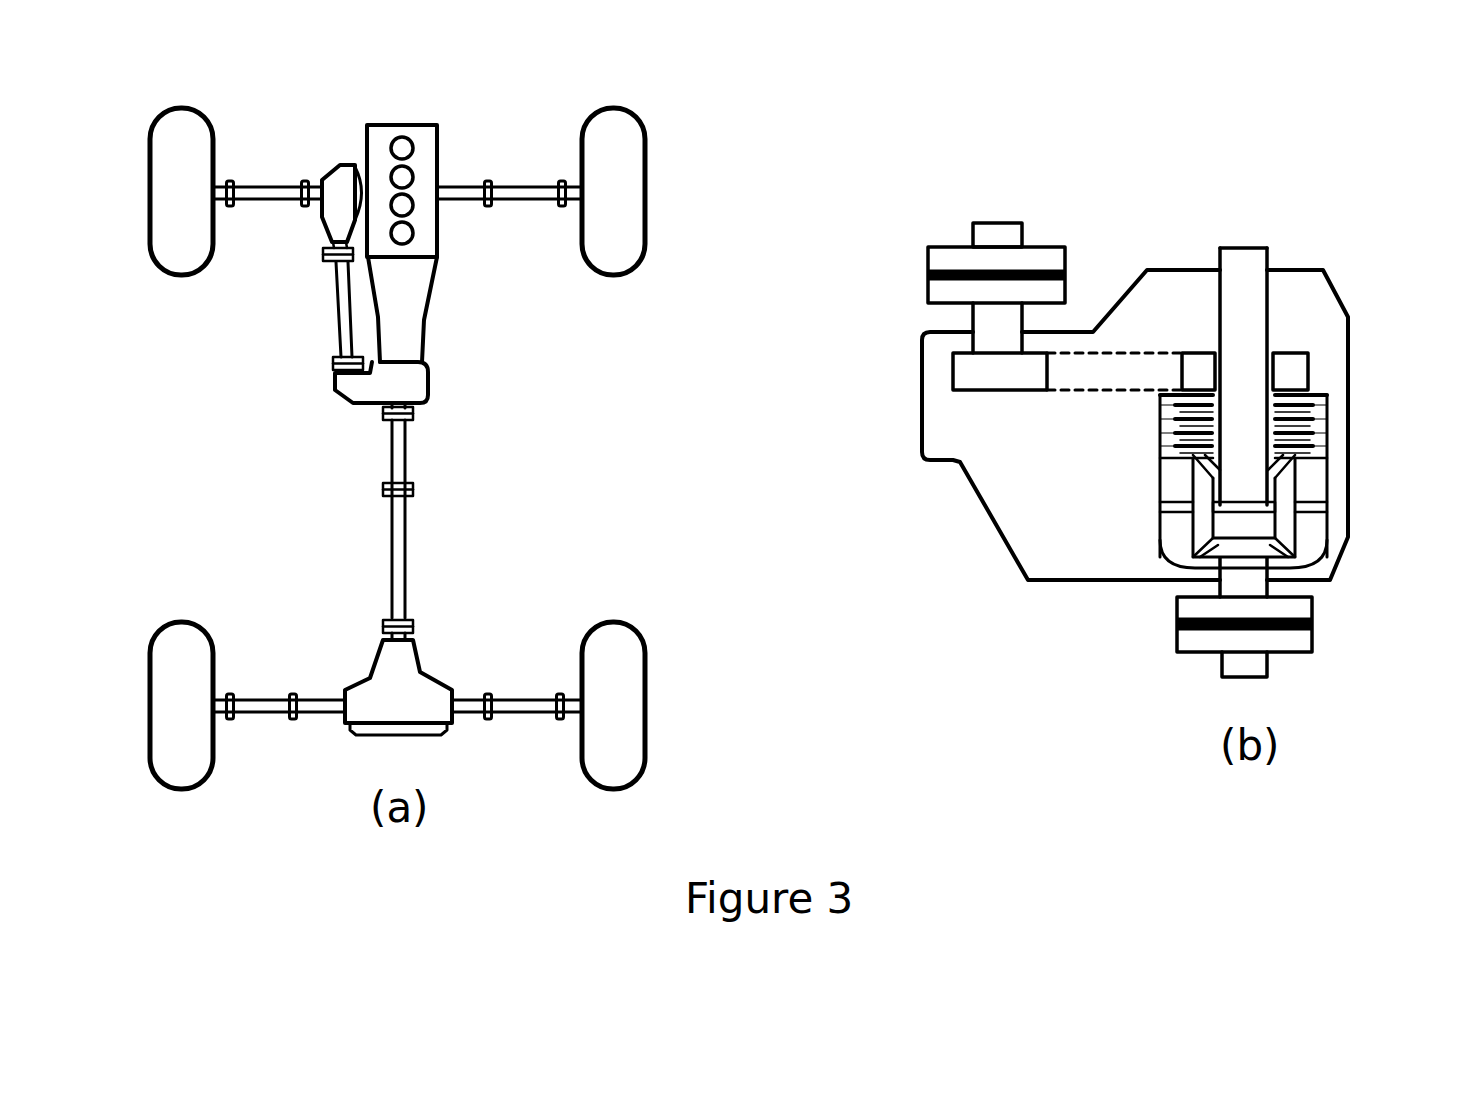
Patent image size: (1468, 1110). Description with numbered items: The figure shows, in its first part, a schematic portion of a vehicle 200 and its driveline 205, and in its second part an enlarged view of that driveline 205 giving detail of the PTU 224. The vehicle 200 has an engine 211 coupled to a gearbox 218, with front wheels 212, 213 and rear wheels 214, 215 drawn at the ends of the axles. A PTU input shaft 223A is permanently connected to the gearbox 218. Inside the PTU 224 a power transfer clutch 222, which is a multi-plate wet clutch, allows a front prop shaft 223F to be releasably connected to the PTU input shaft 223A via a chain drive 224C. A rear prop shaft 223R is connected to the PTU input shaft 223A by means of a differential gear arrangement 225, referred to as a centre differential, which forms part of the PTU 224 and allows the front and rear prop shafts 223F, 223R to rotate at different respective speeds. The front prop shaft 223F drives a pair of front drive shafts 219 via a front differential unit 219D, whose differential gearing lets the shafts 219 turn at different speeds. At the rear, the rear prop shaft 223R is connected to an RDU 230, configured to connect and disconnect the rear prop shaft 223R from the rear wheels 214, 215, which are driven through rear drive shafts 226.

The vehicle 200 is at (575, 60).
The driveline 205 is at (478, 460).
The engine 211 is at (424, 135).
The left front wheel 212 is at (175, 133).
The right front wheel 213 is at (625, 133).
The rear wheel 214 is at (172, 758).
The rear wheel 215 is at (623, 758).
The gearbox 218 is at (415, 323).
The front drive shafts 219 is at (273, 188).
The front differential unit 219D is at (340, 168).
The power transfer clutch 222 is at (1330, 410).
The front prop shaft 223F is at (342, 298).
The rear prop shaft 223R is at (397, 533).
The PTU input shaft 223A is at (1262, 258).
The PTU 224 is at (342, 382).
The chain drive 224C is at (1068, 353).
The differential gear arrangement 225 is at (1313, 526).
The rear axle shafts 226 is at (267, 713).
The RDU 230 is at (418, 663).